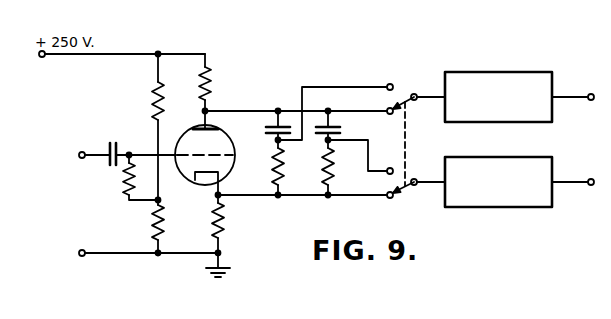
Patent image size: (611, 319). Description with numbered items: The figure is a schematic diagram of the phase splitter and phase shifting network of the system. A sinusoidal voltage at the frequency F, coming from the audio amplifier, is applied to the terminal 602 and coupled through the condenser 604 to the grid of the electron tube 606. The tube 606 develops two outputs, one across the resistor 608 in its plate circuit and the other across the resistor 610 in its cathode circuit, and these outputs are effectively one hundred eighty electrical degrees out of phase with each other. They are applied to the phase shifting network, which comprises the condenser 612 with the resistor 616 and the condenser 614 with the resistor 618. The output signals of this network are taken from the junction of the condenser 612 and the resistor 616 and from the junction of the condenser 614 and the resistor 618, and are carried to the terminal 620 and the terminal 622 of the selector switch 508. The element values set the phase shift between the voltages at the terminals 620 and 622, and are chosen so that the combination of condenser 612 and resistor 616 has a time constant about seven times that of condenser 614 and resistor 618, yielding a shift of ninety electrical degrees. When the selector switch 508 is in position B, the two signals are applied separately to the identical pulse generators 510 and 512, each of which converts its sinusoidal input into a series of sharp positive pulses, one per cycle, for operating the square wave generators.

The selector switch 508 is at (408, 150).
The pulse generator 510 is at (517, 157).
The pulse generator 512 is at (517, 72).
The terminal 602 is at (80, 153).
The condenser 604 is at (113, 141).
The electron tube 606 is at (233, 164).
The resistor 608 is at (211, 82).
The resistor 610 is at (225, 227).
The condenser 612 is at (267, 130).
The condenser 614 is at (362, 130).
The resistor 616 is at (283, 162).
The resistor 618 is at (331, 170).
The terminal 620 is at (386, 83).
The terminal 622 is at (388, 175).